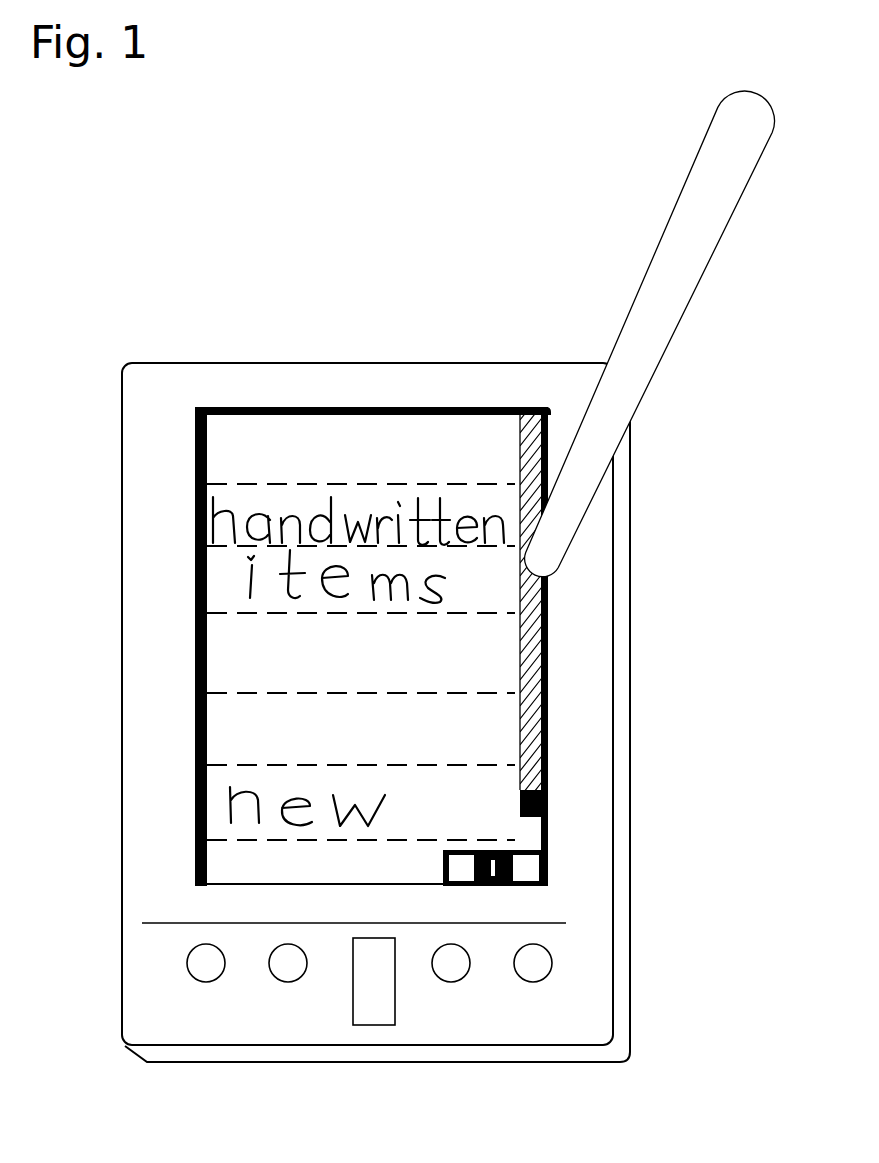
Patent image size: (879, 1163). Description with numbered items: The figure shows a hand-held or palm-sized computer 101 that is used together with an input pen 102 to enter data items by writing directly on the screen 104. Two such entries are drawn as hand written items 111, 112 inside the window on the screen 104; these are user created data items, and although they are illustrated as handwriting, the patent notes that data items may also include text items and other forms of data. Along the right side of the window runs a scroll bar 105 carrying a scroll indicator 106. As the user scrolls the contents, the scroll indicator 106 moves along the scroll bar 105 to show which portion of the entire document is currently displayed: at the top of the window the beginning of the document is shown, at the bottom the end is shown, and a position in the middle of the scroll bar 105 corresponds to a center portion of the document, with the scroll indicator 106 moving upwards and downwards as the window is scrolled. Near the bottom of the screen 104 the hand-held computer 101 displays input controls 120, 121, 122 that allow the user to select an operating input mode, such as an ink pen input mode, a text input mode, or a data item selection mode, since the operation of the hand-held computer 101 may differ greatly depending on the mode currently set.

The hand-held computer 101 is at (474, 712).
The input pen 102 is at (686, 334).
The screen 104 is at (238, 663).
The scroll bar 105 is at (623, 605).
The scroll indicator 106 is at (628, 731).
The hand written data item 111 is at (223, 495).
The hand written data item 112 is at (223, 793).
The input control 120 is at (430, 851).
The input control 121 is at (516, 849).
The input control 122 is at (556, 881).